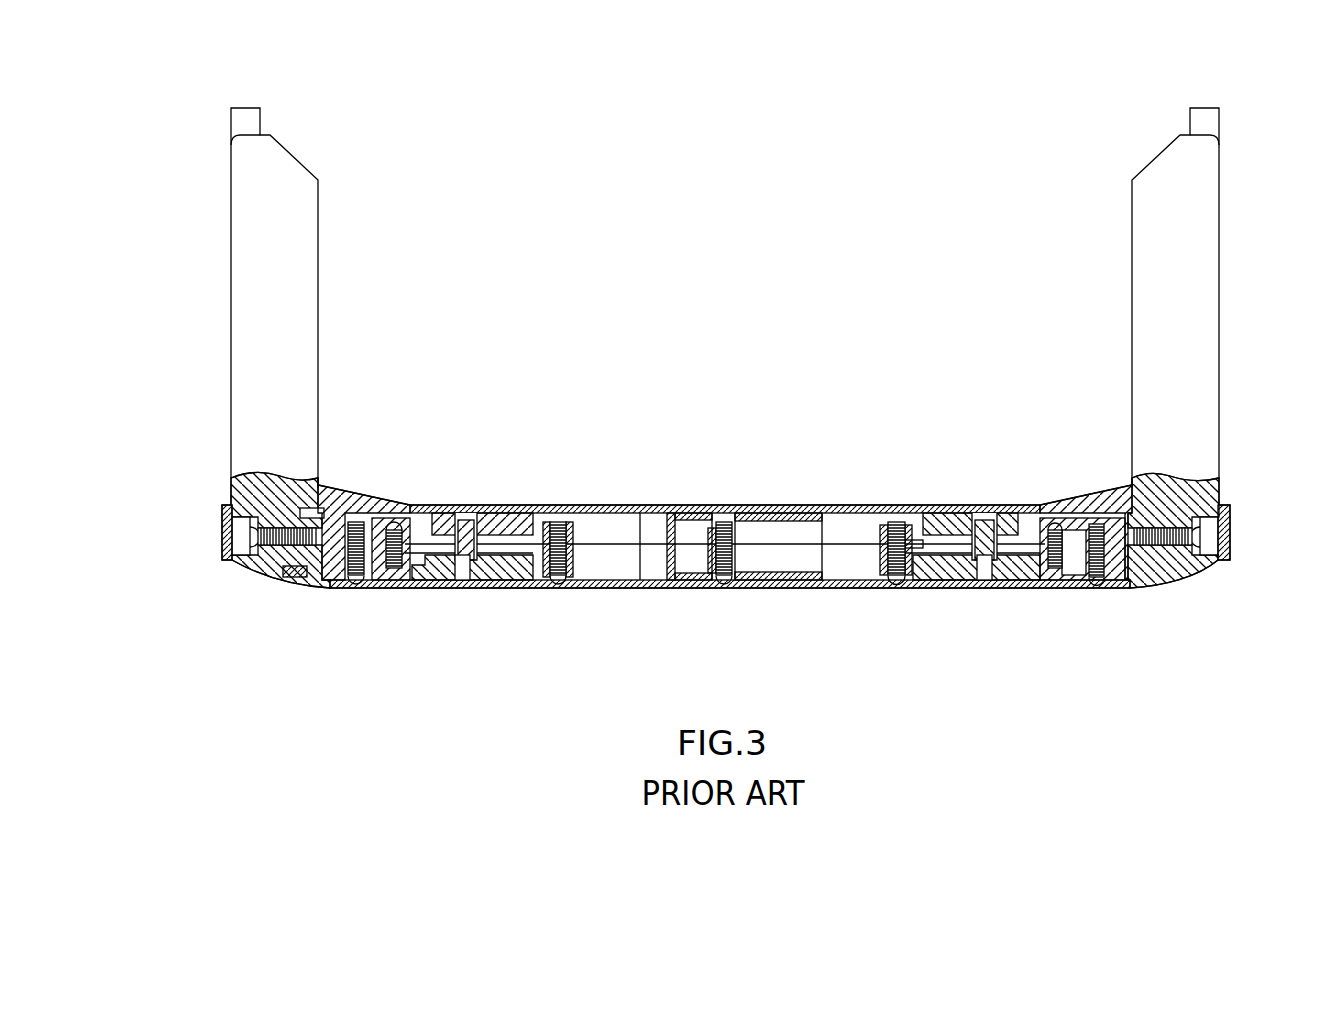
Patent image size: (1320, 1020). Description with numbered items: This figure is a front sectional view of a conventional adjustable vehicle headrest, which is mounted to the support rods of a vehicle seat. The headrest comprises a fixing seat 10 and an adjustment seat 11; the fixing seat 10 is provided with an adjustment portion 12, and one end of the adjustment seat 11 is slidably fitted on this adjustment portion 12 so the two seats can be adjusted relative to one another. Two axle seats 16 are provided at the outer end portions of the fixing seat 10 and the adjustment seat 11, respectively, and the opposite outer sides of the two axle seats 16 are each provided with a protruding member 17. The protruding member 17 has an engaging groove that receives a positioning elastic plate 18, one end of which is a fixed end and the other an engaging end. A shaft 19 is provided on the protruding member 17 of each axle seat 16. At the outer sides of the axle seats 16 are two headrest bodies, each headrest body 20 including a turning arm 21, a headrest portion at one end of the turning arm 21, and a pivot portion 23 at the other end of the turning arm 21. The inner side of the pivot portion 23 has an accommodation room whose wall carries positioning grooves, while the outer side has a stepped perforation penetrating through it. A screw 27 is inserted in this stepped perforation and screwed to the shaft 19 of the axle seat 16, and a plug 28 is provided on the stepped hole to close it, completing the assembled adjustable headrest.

The fixing seat 10 is at (948, 505).
The adjustment seat 11 is at (655, 505).
The adjustment portion 12 is at (788, 505).
The axle seat 16 is at (333, 487).
The protruding member 17 is at (315, 490).
The positioning elastic plate 18 is at (302, 572).
The shaft 19 is at (250, 560).
The headrest body 20 is at (333, 345).
The turning arm 21 is at (272, 402).
The pivot portion 23 is at (285, 572).
The screw 27 is at (290, 563).
The plug 28 is at (226, 540).